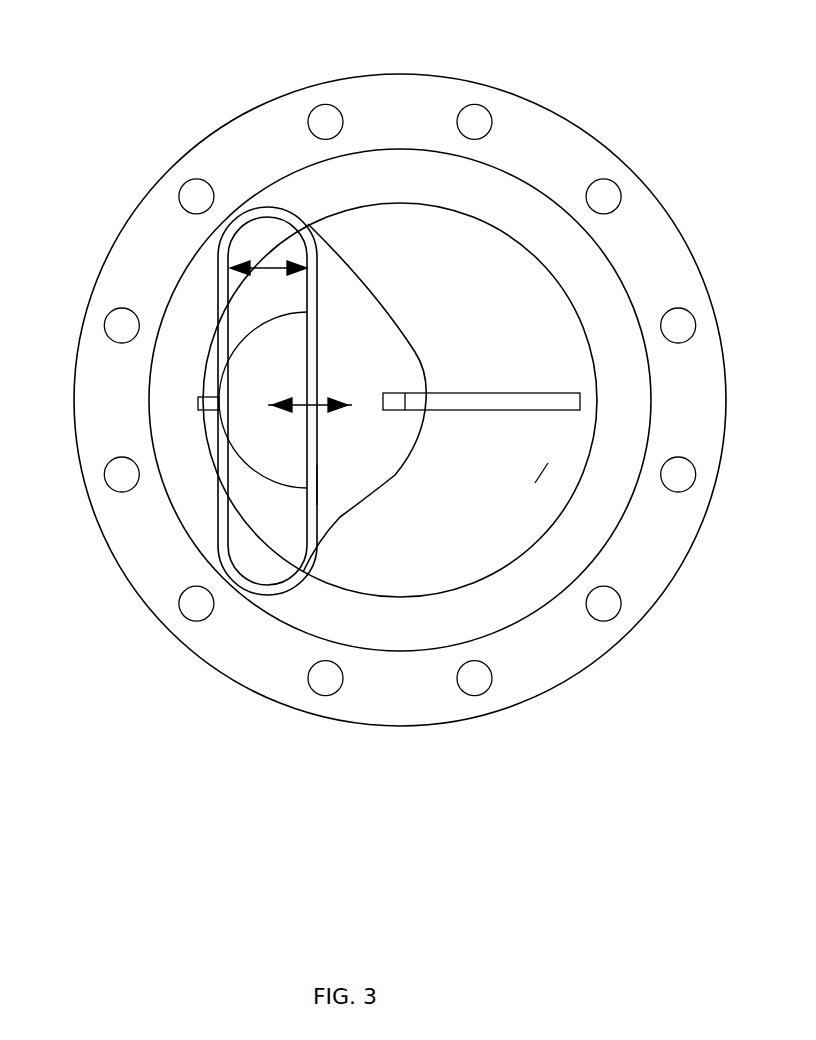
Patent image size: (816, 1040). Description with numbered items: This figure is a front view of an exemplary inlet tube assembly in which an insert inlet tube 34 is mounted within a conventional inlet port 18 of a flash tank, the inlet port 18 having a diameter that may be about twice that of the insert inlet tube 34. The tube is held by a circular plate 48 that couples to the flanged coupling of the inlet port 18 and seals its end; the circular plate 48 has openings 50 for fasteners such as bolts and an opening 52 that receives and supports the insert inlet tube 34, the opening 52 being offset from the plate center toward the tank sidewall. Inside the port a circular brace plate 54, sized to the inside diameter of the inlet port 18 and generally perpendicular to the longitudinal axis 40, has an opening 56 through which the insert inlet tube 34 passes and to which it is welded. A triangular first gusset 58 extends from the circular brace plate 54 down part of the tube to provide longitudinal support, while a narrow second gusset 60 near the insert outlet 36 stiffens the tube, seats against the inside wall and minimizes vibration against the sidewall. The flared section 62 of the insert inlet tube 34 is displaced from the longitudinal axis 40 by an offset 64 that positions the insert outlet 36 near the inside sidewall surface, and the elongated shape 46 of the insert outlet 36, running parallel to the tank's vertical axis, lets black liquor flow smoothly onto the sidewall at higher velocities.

The inlet port 18 is at (623, 367).
The insert inlet tube 34 is at (355, 475).
The insert outlet 36 is at (223, 522).
The longitudinal axis 40 is at (350, 400).
The shape 46 is at (263, 267).
The circular plate 48 is at (653, 245).
The openings 50 is at (470, 680).
The opening 52 is at (415, 350).
The circular brace plate 54 is at (540, 478).
The opening 56 is at (420, 443).
The first gusset 58 is at (538, 410).
The second gusset 60 is at (198, 403).
The flared section 62 is at (317, 485).
The offset 64 is at (267, 405).